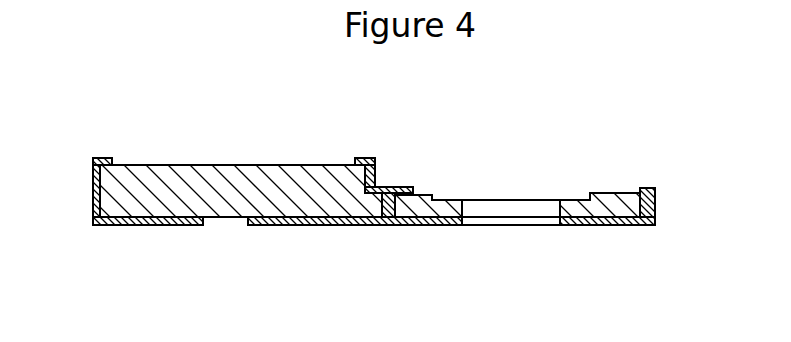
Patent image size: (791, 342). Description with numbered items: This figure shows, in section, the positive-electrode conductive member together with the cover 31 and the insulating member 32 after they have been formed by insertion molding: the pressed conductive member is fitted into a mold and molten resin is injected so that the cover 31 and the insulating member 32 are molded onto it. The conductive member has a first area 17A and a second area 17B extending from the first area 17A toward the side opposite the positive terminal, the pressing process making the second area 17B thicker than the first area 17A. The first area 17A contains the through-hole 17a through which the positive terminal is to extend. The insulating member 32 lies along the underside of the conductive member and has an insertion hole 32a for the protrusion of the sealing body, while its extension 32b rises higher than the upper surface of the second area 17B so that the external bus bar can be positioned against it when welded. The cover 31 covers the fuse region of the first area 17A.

The insulating member 32 is at (355, 226).
The insertion hole 32a is at (203, 221).
The extension 32b is at (103, 159).
The cover 31 is at (404, 187).
The second area 17B is at (241, 164).
The first area 17A is at (605, 193).
The through-hole 17a is at (505, 200).